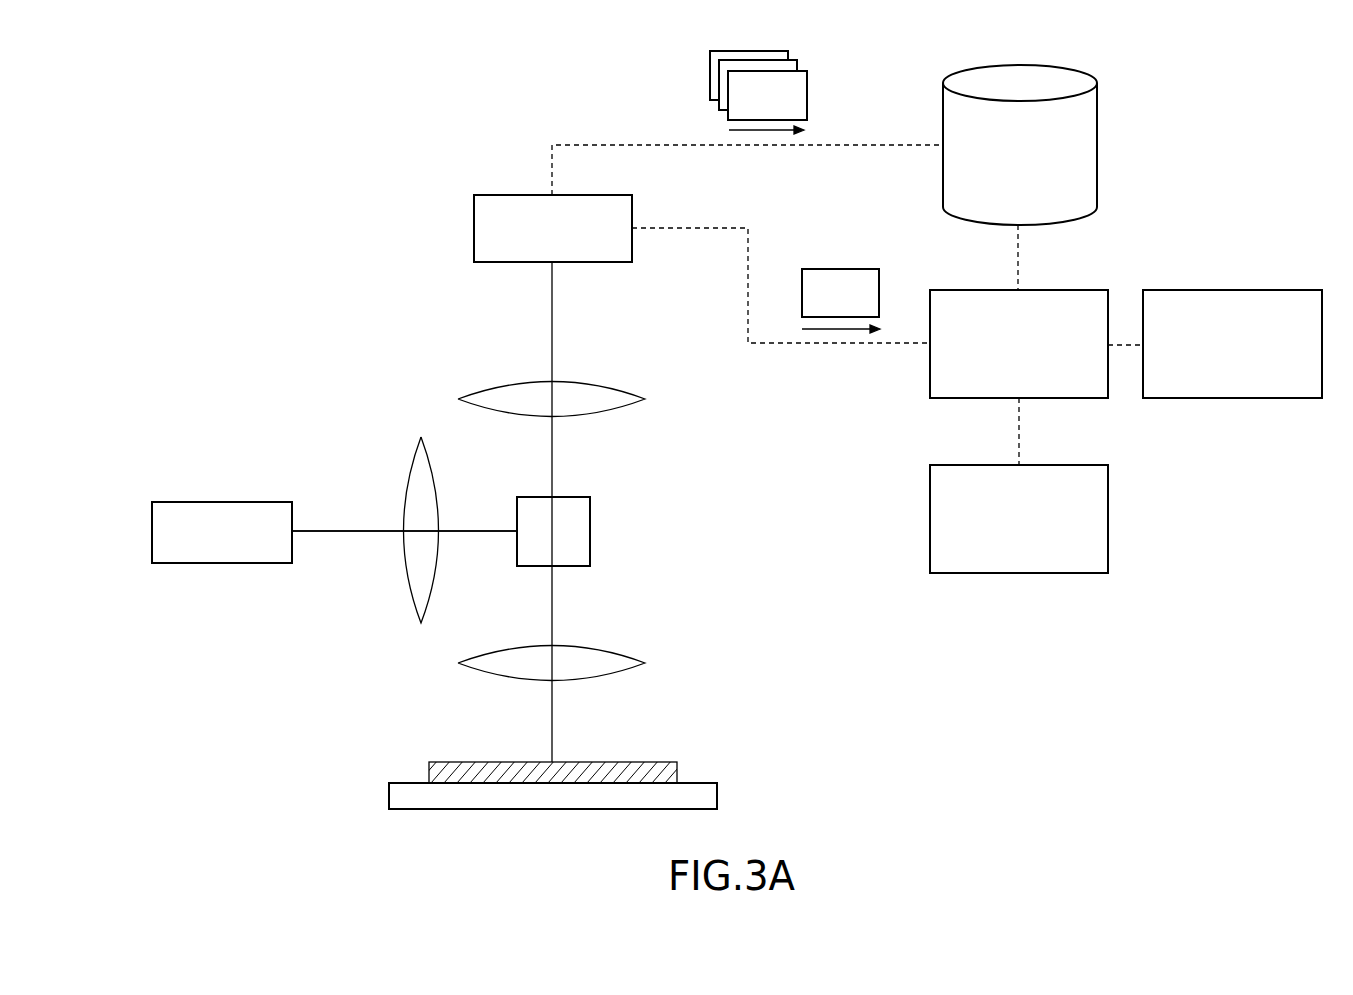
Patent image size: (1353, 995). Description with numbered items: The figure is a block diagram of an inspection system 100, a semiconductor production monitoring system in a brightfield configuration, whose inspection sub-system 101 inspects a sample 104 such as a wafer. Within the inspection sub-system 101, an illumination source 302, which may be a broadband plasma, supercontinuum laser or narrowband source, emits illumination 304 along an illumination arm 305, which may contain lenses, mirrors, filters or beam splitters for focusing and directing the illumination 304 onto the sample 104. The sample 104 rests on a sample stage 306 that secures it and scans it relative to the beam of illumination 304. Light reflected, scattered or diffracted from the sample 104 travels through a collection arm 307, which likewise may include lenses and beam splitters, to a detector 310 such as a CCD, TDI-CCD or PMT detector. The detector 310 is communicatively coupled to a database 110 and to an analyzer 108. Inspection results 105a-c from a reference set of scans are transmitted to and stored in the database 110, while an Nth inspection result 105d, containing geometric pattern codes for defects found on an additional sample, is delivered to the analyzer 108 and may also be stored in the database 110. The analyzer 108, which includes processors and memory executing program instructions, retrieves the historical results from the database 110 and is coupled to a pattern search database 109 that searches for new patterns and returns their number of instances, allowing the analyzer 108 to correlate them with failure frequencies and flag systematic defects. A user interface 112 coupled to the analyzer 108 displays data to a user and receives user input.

The inspection system 100 is at (218, 143).
The inspection sub-system 101 is at (328, 252).
The sample 104 is at (677, 772).
The inspection results 105a-c is at (799, 106).
The Nth inspection result 105d is at (865, 305).
The analyzer 108 is at (968, 317).
The pattern search database 109 is at (1182, 317).
The database 110 is at (1038, 173).
The user interface 112 is at (968, 492).
The illumination source 302 is at (240, 546).
The illumination 304 is at (337, 531).
The illumination arm 305 is at (395, 423).
The sample stage 306 is at (717, 792).
The collection arm 307 is at (640, 463).
The detector 310 is at (571, 241).